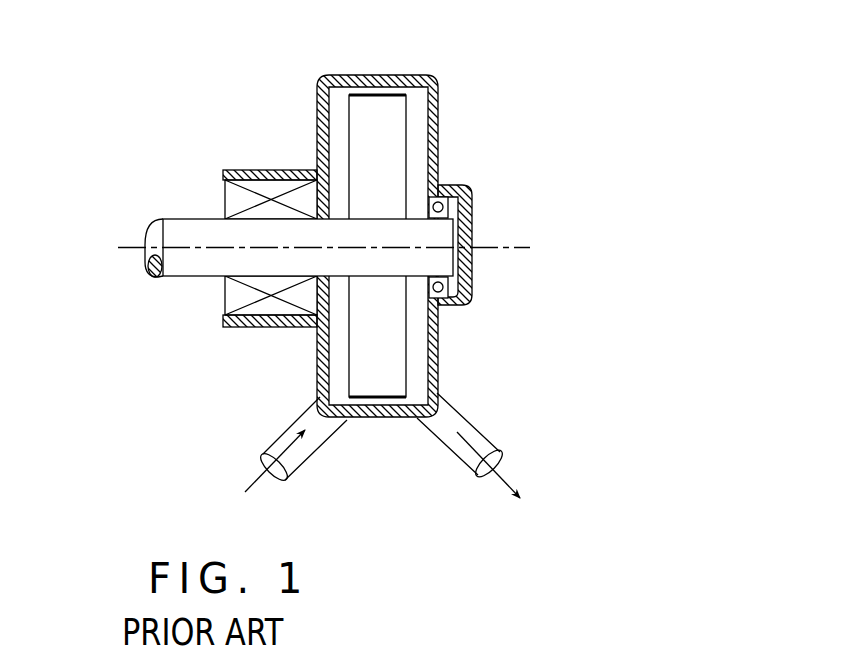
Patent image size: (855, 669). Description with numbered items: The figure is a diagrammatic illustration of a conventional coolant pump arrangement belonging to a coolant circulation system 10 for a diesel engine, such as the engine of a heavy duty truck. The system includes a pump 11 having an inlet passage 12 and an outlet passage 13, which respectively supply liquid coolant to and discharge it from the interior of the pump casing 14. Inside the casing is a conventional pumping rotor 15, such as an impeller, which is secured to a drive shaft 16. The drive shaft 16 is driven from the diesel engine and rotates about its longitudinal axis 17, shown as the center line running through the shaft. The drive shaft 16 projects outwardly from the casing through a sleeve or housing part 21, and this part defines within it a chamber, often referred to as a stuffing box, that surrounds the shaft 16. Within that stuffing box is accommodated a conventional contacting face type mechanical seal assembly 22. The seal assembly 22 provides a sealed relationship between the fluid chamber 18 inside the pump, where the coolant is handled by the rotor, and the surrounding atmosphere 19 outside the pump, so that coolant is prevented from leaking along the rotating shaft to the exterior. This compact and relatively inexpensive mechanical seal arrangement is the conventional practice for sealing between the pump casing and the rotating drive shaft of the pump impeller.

The coolant circulation system 10 is at (221, 58).
The pump 11 is at (438, 78).
The inlet passage 12 is at (277, 438).
The outlet passage 13 is at (458, 415).
The pump casing 14 is at (438, 122).
The pumping rotor 15 is at (395, 339).
The drive shaft 16 is at (177, 274).
The longitudinal axis 17 is at (163, 243).
The fluid chamber 18 is at (418, 172).
The surrounding atmosphere 19 is at (70, 173).
The sleeve or housing part 21 is at (241, 169).
The mechanical seal assembly 22 is at (236, 338).